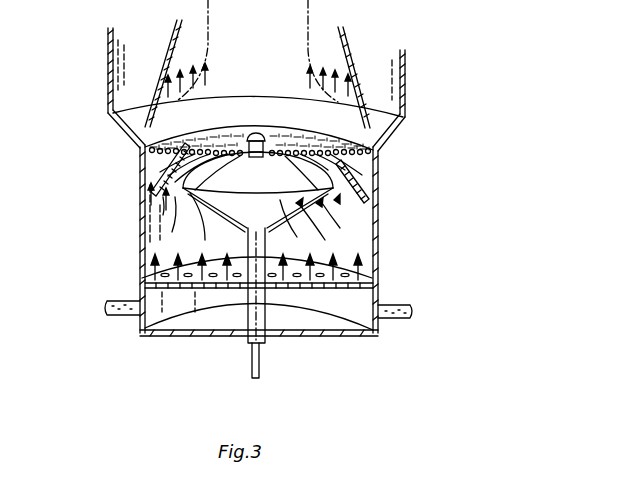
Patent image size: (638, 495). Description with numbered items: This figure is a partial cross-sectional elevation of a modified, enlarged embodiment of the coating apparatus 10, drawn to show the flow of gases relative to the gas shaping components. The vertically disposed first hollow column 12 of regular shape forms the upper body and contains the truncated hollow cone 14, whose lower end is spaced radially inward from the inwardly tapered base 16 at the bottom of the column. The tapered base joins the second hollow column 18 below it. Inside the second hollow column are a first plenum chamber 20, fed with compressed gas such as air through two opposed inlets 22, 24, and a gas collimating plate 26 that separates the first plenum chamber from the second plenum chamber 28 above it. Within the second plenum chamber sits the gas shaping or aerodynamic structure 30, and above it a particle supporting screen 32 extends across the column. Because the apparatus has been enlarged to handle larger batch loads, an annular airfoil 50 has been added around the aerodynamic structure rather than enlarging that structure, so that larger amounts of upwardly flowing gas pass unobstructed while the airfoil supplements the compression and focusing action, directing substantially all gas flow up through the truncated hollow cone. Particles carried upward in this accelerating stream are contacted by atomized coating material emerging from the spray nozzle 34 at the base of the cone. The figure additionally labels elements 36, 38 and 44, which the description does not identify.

The coating apparatus 10 is at (80, 64).
The first hollow column 12 is at (104, 100).
The truncated hollow cone 14 is at (350, 30).
The inwardly tapered base 16 is at (123, 132).
The second hollow column 18 is at (380, 203).
The first plenum chamber 20 is at (373, 333).
The inlet 22 is at (90, 309).
The inlet 24 is at (425, 312).
The collimating plate 26 is at (367, 283).
The second plenum chamber 28 is at (380, 242).
The aerodynamic structure 30 is at (275, 196).
The particle supporting screen 32 is at (375, 155).
The spray nozzle 34 is at (268, 135).
The discharge pipe 36 is at (248, 369).
The rod 38 is at (260, 372).
The flame 44 is at (308, 50).
The annular airfoil 50 is at (377, 189).